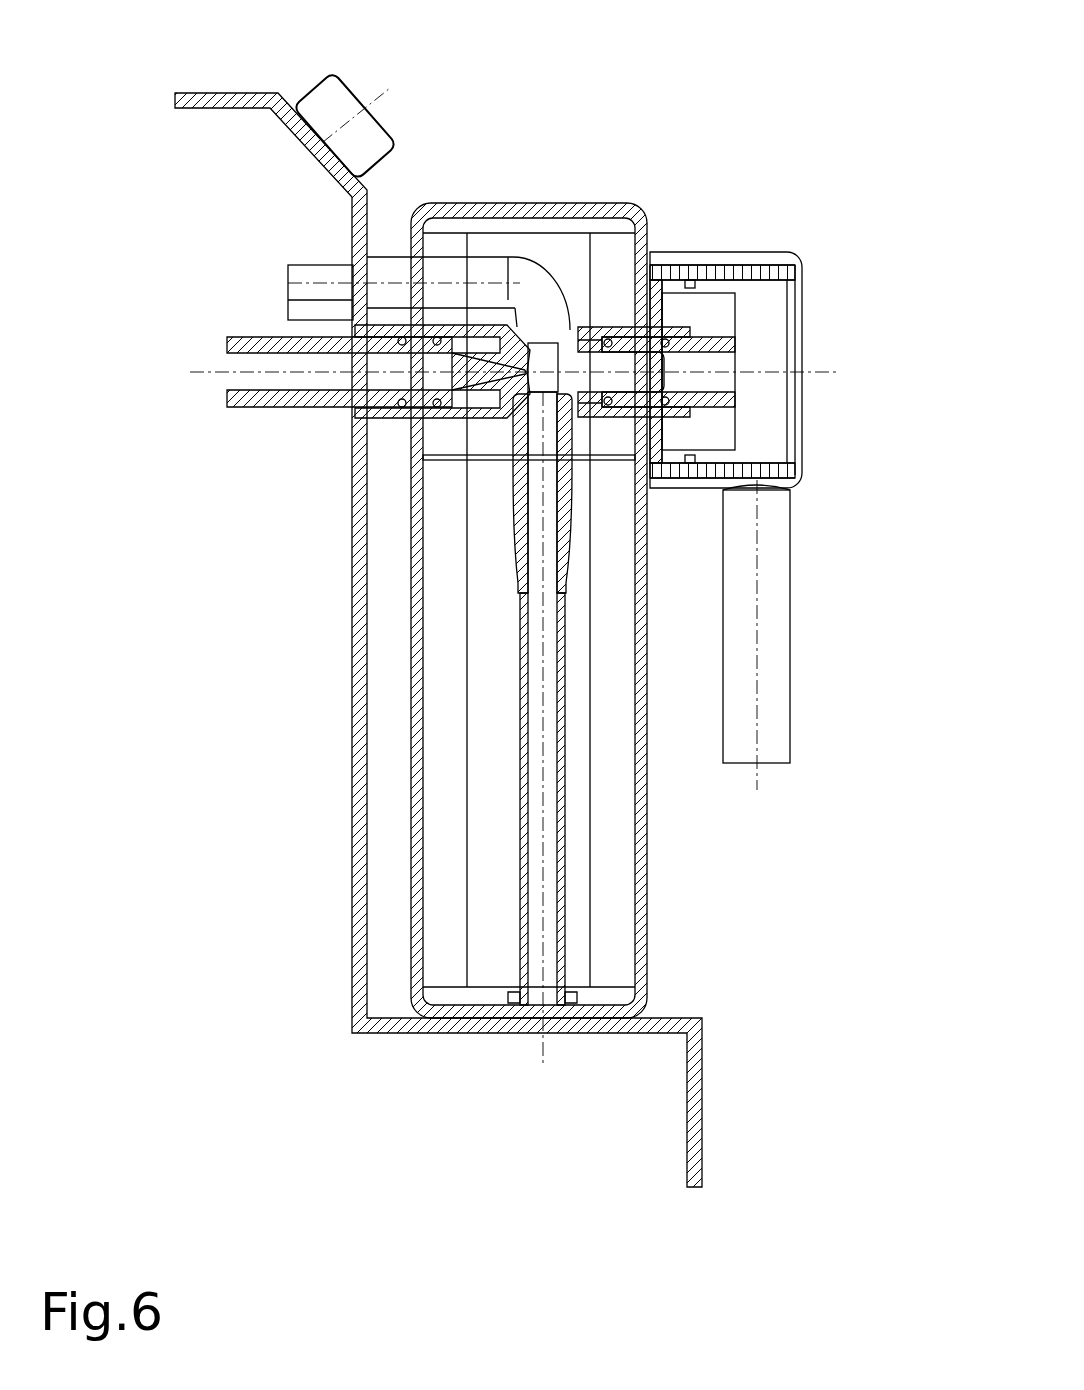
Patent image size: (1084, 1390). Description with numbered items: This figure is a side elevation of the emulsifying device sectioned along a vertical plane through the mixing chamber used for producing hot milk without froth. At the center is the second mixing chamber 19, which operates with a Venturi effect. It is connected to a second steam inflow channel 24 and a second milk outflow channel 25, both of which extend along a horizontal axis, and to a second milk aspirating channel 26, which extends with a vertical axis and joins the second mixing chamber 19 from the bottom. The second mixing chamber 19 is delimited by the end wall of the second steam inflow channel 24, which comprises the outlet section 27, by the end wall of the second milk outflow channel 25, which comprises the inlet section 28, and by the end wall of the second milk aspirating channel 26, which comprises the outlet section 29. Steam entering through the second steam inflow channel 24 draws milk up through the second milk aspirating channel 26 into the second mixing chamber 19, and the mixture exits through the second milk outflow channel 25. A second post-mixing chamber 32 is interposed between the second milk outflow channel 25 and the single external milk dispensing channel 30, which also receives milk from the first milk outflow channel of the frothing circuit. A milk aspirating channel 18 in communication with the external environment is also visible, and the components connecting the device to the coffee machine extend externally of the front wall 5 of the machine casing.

The front wall 5 is at (350, 763).
The milk aspirating channel 18 is at (477, 285).
The second mixing chamber 19 is at (543, 365).
The second steam inflow channel 24 is at (443, 322).
The second milk outflow channel 25 is at (592, 353).
The second milk aspirating channel 26 is at (542, 482).
The outlet section 27 is at (500, 405).
The inlet section 28 is at (578, 403).
The outlet section 29 is at (573, 420).
The external milk dispensing channel 30 is at (773, 692).
The second post-mixing chamber 32 is at (650, 377).